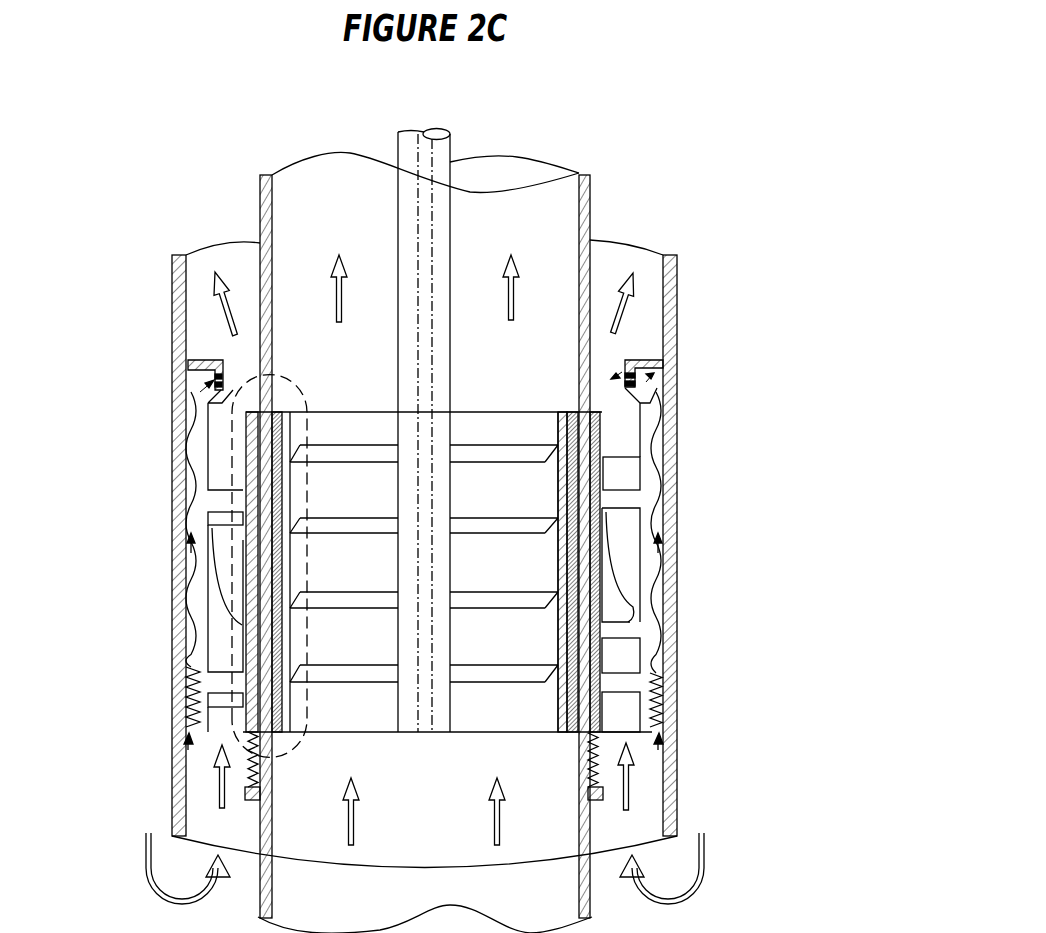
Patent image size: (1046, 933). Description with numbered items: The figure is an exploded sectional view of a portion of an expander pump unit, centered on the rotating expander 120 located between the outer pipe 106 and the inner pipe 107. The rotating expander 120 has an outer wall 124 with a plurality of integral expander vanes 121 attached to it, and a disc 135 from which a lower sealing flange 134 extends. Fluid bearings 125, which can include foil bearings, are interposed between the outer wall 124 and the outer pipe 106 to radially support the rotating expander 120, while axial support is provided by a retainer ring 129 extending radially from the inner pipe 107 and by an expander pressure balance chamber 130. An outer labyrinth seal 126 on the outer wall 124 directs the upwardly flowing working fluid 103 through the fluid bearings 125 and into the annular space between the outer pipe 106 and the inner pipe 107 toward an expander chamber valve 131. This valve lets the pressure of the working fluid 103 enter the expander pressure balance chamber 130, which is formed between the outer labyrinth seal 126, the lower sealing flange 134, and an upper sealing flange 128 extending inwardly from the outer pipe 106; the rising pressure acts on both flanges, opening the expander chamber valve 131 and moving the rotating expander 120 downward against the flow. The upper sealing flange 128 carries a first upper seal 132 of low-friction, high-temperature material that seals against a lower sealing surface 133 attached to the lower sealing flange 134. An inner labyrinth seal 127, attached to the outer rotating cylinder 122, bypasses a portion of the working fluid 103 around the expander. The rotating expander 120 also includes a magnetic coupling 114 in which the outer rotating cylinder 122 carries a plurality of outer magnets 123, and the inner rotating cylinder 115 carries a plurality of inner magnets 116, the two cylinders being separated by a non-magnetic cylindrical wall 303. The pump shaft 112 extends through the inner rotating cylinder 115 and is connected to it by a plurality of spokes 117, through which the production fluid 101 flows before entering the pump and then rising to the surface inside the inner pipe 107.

The production fluid 101 is at (425, 841).
The upwardly flowing working fluid 103 is at (185, 545).
The outer pipe 106 is at (672, 757).
The inner pipe 107 is at (583, 198).
The pump shaft 112 is at (442, 210).
The magnetic coupling 114 is at (220, 563).
The inner rotating cylinder 115 is at (567, 438).
The inner magnets 116 is at (575, 467).
The spokes 117 is at (495, 448).
The rotating expander 120 is at (618, 630).
The expander vanes 121 is at (595, 537).
The outer rotating cylinder 122 is at (628, 462).
The outer magnets 123 is at (603, 513).
The outer wall 124 is at (643, 665).
The fluid bearings 125 is at (190, 480).
The outer labyrinth seal 126 is at (188, 687).
The inner labyrinth seal 127 is at (253, 770).
The upper sealing flange 128 is at (643, 363).
The retainer ring 129 is at (243, 795).
The expander pressure balance chamber 130 is at (200, 380).
The expander chamber valve 131 is at (205, 351).
The first upper seal 132 is at (217, 375).
The lower sealing surface 133 is at (207, 385).
The lower sealing flange 134 is at (637, 377).
The disc 135 is at (648, 393).
The non-magnetic cylindrical wall 303 is at (600, 482).